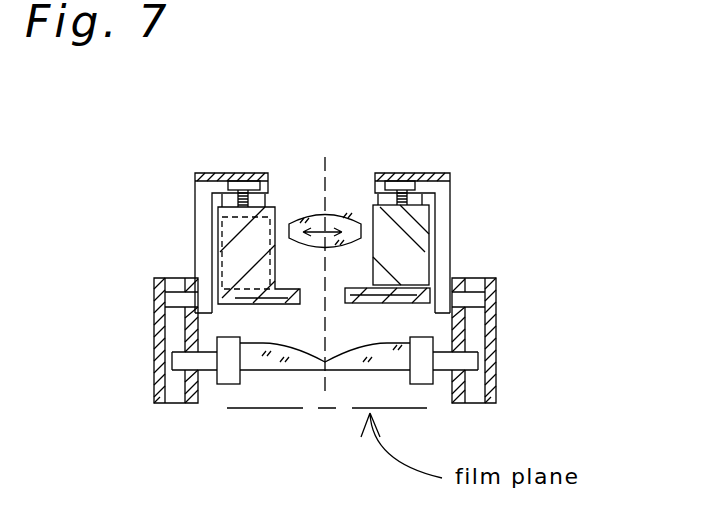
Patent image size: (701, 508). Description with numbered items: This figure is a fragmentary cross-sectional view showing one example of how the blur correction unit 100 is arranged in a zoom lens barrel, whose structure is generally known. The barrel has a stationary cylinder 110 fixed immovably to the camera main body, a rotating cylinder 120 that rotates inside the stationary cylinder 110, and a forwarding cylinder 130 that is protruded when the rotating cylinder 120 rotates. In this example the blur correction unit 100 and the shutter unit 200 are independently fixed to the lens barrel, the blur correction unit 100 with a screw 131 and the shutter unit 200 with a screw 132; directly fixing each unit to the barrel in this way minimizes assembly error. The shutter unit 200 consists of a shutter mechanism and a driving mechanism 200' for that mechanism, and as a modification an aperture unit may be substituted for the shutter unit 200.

The blur correction unit 100 is at (412, 247).
The stationary cylinder 110 is at (487, 348).
The rotating cylinder 120 is at (458, 332).
The forwarding cylinder 130 is at (443, 197).
The screw 131 is at (256, 178).
The screw 132 is at (413, 178).
The shutter unit 200 is at (340, 316).
The driving mechanism 200' is at (191, 246).